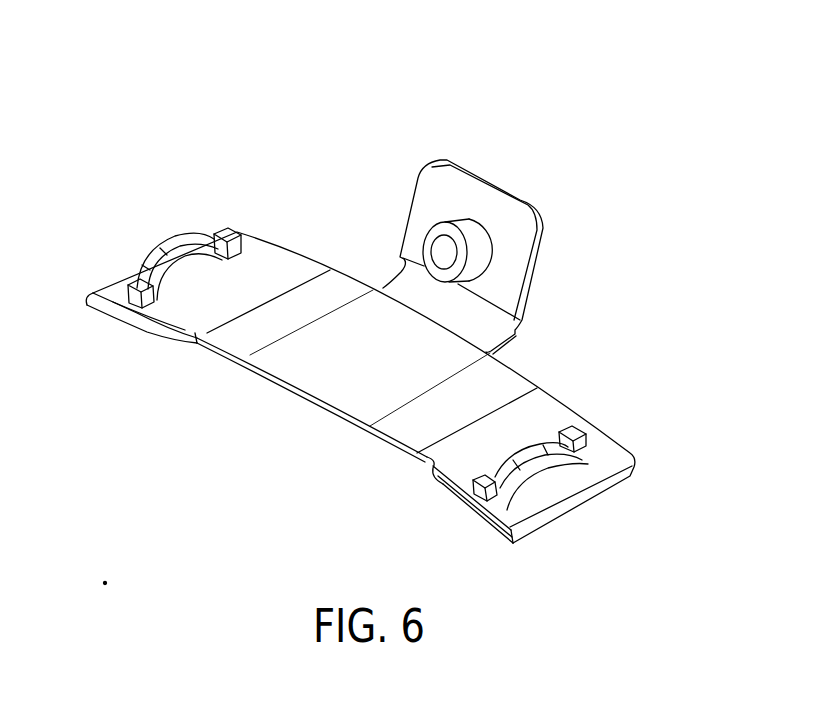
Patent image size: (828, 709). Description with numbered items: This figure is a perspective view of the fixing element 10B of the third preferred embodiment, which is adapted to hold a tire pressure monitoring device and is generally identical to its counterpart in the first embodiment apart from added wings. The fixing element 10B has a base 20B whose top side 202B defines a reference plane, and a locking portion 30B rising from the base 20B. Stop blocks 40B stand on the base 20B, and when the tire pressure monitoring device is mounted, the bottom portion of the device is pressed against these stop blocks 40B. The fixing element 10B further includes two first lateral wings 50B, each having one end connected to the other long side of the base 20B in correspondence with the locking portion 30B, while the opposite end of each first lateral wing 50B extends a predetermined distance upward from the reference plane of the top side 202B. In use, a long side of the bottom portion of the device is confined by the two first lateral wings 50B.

The fixing element 10B is at (209, 112).
The base 20B is at (630, 450).
The top side 202B is at (347, 387).
The locking portion 30B is at (535, 200).
The stop blocks 40B is at (137, 288).
The first lateral wings 50B is at (102, 308).